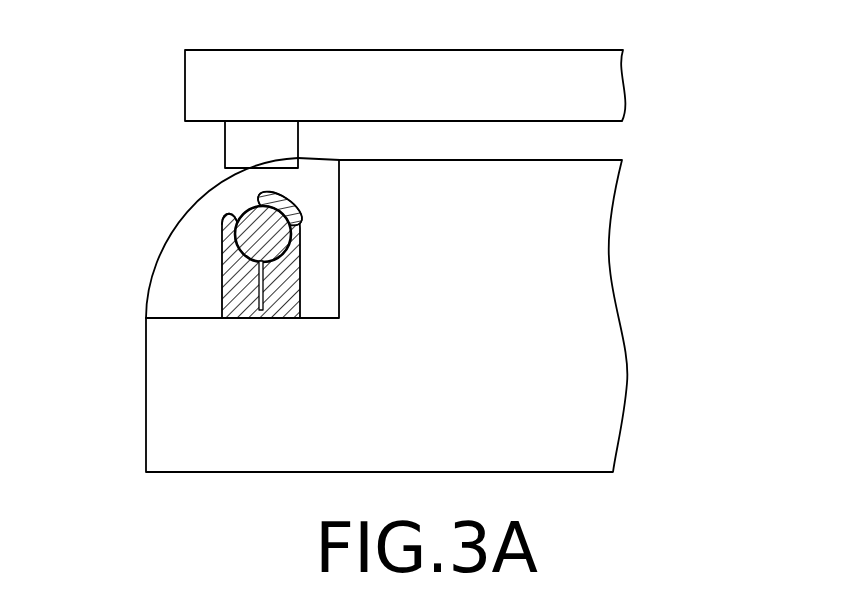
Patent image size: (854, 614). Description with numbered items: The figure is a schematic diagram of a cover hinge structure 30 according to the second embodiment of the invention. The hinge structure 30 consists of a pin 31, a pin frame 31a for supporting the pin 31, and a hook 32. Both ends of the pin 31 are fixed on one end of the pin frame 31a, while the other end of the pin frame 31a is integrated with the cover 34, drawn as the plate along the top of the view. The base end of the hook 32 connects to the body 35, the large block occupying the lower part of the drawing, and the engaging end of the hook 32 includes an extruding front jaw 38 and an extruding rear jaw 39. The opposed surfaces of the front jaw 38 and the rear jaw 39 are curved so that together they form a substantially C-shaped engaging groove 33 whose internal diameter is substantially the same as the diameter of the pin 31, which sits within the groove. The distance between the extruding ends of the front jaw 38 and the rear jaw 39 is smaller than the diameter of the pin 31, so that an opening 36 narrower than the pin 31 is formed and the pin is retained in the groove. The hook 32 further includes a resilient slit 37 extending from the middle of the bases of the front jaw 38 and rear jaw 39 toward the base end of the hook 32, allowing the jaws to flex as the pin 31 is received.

The hinge structure 30 is at (782, 70).
The pin 31 is at (274, 261).
The pin frame 31a is at (233, 137).
The hook 32 is at (223, 313).
The engaging groove 33 is at (274, 247).
The cover 34 is at (502, 65).
The body 35 is at (600, 180).
The opening 36 is at (242, 208).
The resilient slit 37 is at (259, 283).
The front jaw 38 is at (302, 220).
The rear jaw 39 is at (220, 237).